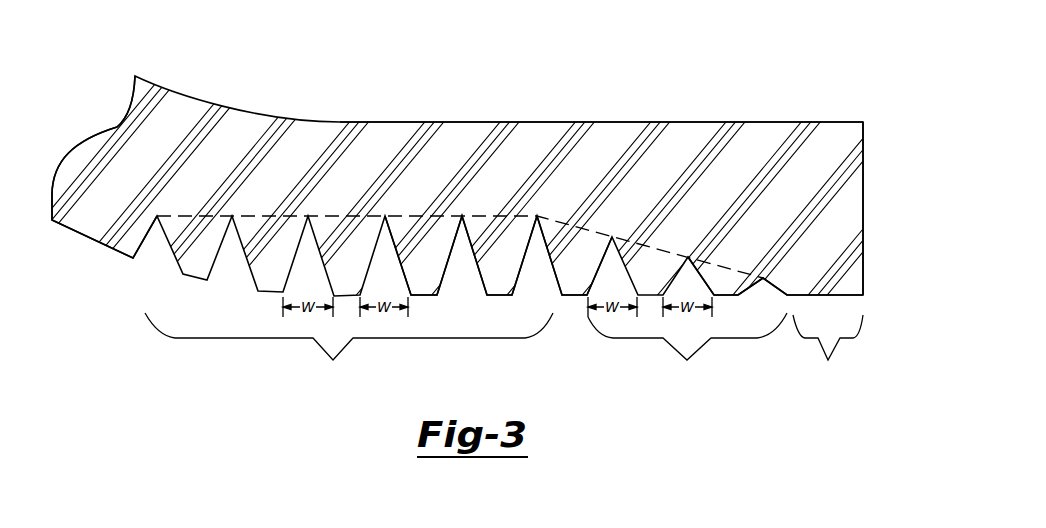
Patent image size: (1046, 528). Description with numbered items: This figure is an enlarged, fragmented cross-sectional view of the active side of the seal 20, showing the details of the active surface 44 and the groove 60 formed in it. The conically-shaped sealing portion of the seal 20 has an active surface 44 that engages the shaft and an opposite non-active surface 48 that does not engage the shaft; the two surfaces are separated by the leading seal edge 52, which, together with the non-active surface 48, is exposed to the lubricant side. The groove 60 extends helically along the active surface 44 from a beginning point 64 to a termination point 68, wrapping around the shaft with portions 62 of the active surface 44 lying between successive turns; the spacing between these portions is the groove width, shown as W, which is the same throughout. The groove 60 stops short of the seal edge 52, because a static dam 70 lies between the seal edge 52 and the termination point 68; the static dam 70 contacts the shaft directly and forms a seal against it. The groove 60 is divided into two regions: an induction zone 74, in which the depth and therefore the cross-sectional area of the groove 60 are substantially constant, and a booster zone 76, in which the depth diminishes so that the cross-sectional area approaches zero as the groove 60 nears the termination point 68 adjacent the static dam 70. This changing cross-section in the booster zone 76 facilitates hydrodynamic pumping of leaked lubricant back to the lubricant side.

The seal 20 is at (685, 97).
The non-active surface 48 is at (455, 122).
The seal edge 52 is at (863, 178).
The beginning point 64 is at (127, 247).
The termination point 68 is at (800, 277).
The active surface 44 is at (572, 298).
The portions of active surface 62 is at (497, 296).
The induction zone 74 is at (349, 352).
The booster zone 76 is at (687, 353).
The static dam 70 is at (828, 355).
The groove 60 is at (372, 357).